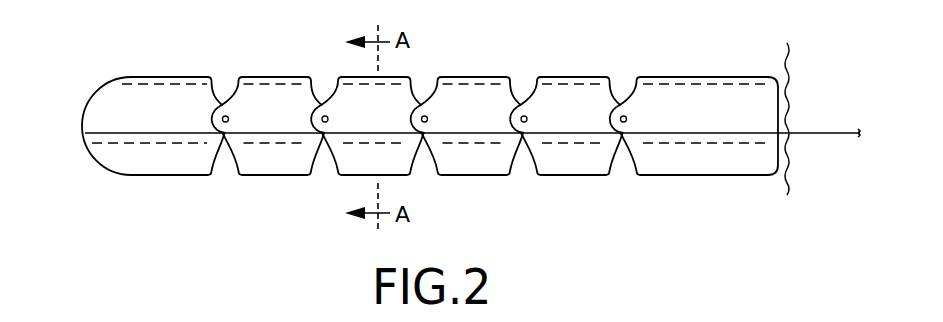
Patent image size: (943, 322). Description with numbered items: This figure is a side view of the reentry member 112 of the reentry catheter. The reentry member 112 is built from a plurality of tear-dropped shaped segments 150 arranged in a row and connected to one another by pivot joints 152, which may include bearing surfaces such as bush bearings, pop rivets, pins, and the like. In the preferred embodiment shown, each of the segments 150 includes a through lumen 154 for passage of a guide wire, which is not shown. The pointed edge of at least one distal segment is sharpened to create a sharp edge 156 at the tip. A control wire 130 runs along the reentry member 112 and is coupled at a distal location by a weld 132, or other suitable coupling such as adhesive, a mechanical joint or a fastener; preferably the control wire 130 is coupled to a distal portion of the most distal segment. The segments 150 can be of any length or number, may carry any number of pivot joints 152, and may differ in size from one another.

The reentry member 112 is at (723, 46).
The control wire 130 is at (287, 134).
The weld 132 is at (115, 134).
The segments 150 is at (275, 88).
The pivot joints 152 is at (617, 108).
The through lumen 154 is at (167, 85).
The sharp edge 156 is at (108, 172).